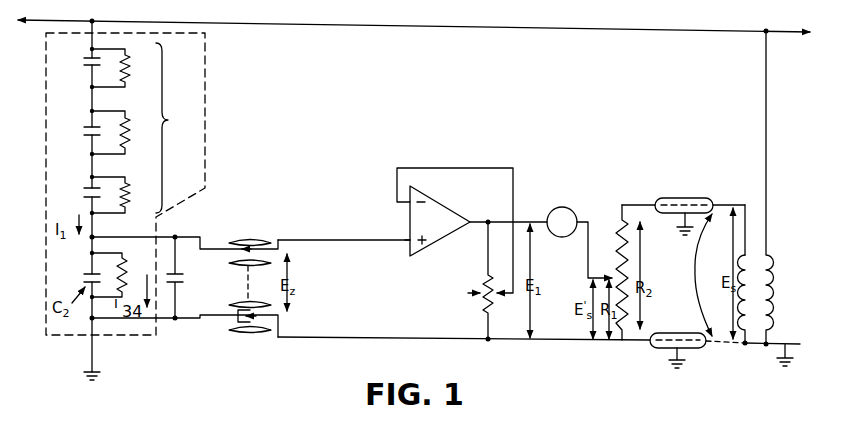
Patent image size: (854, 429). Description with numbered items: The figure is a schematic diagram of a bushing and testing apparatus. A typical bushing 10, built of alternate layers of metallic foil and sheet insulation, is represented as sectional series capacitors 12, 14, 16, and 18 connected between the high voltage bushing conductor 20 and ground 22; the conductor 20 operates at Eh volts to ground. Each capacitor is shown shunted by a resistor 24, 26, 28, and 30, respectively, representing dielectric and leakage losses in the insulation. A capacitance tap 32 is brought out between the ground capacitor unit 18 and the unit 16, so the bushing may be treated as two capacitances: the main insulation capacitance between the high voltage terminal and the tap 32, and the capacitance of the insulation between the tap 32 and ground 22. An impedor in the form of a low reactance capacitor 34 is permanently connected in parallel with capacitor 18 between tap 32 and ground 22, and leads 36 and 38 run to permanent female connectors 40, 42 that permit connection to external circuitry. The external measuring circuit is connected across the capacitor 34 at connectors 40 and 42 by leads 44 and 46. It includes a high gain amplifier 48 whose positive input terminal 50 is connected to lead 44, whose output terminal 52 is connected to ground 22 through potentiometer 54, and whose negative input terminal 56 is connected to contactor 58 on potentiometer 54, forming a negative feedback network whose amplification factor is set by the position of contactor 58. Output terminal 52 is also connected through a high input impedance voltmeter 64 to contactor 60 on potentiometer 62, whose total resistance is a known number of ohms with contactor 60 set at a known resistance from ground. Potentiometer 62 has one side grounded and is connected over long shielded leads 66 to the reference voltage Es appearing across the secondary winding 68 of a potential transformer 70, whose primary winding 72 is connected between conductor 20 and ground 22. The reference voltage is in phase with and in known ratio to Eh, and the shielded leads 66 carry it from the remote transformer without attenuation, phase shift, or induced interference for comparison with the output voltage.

The bushing 10 is at (205, 107).
The sectional series capacitor 12 is at (88, 62).
The sectional series capacitor 14 is at (86, 132).
The sectional series capacitor 16 is at (88, 193).
The ground capacitor unit 18 is at (86, 276).
The high voltage bushing conductor 20 is at (304, 24).
The ground 22 is at (86, 355).
The resistor 24 is at (130, 70).
The resistor 26 is at (130, 136).
The resistor 28 is at (130, 190).
The resistor 30 is at (124, 272).
The capacitance tap 32 is at (86, 240).
The low reactance capacitor 34 is at (186, 274).
The lead 36 is at (216, 249).
The lead 38 is at (211, 324).
The permanent female connector 40 is at (258, 238).
The permanent female connector 42 is at (250, 334).
The lead 44 is at (318, 240).
The lead 46 is at (318, 337).
The high gain amplifier 48 is at (458, 226).
The positive input terminal 50 is at (415, 248).
The output terminal 52 is at (461, 212).
The potentiometer 54 is at (462, 294).
The negative input terminal 56 is at (412, 206).
The contactor 58 is at (498, 282).
The contactor 60 is at (610, 274).
The potentiometer 62 is at (614, 250).
The high input impedance voltmeter 64 is at (567, 207).
The long shielded leads 66 is at (683, 283).
The secondary winding 68 is at (753, 304).
The potential transformer 70 is at (757, 204).
The primary winding 72 is at (771, 276).